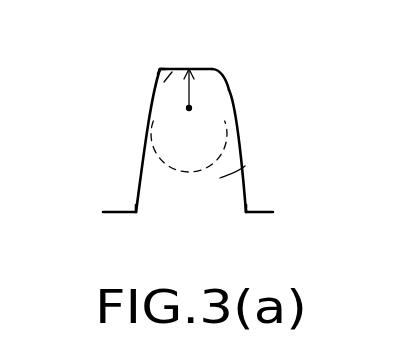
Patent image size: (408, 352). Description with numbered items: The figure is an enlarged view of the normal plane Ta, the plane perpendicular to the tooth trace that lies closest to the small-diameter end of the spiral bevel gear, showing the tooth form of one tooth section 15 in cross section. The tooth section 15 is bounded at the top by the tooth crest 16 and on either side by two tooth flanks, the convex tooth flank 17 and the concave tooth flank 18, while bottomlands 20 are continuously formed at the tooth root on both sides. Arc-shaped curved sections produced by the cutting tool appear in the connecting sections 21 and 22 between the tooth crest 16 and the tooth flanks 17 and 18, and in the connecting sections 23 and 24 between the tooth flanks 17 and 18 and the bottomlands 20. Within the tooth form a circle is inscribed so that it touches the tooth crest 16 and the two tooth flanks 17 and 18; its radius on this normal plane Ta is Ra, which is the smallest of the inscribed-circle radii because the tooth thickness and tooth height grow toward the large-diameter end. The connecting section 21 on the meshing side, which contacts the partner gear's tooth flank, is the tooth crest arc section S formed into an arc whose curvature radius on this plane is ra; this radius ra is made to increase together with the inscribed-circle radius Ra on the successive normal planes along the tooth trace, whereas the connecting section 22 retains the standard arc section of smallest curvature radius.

The tooth section 15 is at (189, 68).
The tooth crest 16 is at (188, 68).
The convex tooth flank 17 is at (242, 145).
The concave tooth flank 18 is at (143, 150).
The bottomland 20 is at (116, 213).
The connecting section 21 is at (219, 75).
The connecting section 22 is at (160, 68).
The connecting section 23 is at (247, 212).
The connecting section 24 is at (134, 204).
The curvature radius of inscribed circle Ra is at (164, 82).
The curvature radius of tooth crest arc section ra is at (216, 83).
The normal plane Ta is at (245, 166).